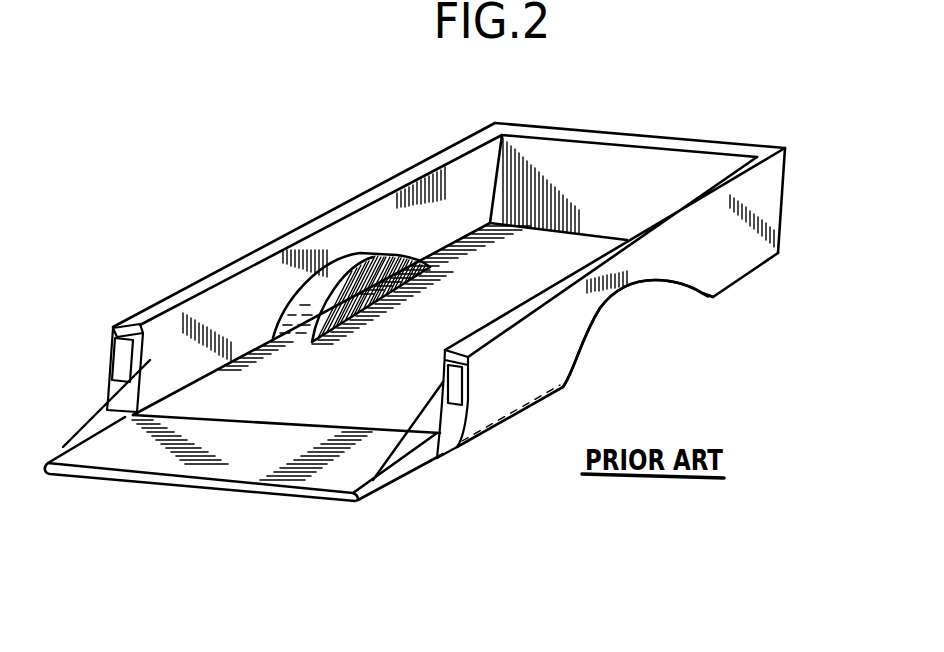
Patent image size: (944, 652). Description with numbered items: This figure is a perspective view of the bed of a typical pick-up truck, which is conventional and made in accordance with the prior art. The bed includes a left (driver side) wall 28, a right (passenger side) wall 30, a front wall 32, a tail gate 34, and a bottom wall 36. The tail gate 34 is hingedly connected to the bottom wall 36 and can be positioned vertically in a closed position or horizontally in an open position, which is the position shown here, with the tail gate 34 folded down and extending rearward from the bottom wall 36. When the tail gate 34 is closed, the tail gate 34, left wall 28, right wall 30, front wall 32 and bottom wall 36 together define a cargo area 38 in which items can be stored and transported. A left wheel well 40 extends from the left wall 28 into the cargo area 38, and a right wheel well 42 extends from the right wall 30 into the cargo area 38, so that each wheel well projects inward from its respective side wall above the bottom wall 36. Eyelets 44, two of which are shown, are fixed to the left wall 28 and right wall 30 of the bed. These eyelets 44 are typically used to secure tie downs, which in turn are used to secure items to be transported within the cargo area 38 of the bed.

The left wall 28 is at (417, 203).
The right wall 30 is at (730, 262).
The front wall 32 is at (653, 165).
The tail gate 34 is at (330, 471).
The bottom wall 36 is at (474, 289).
The cargo area 38 is at (286, 387).
The left wheel well 40 is at (338, 268).
The right wheel well 42 is at (687, 290).
The eyelets 44 is at (154, 373).